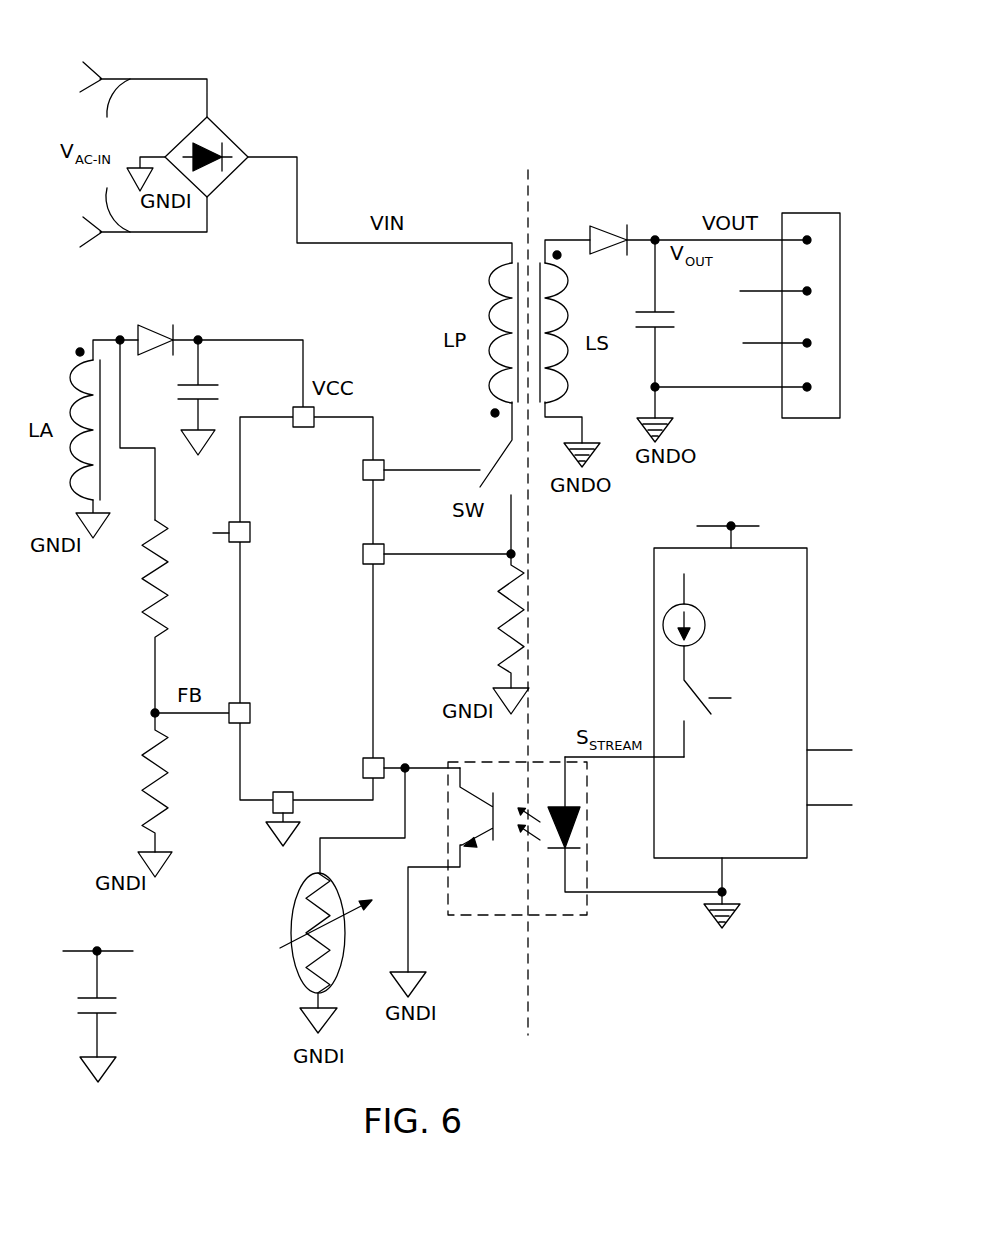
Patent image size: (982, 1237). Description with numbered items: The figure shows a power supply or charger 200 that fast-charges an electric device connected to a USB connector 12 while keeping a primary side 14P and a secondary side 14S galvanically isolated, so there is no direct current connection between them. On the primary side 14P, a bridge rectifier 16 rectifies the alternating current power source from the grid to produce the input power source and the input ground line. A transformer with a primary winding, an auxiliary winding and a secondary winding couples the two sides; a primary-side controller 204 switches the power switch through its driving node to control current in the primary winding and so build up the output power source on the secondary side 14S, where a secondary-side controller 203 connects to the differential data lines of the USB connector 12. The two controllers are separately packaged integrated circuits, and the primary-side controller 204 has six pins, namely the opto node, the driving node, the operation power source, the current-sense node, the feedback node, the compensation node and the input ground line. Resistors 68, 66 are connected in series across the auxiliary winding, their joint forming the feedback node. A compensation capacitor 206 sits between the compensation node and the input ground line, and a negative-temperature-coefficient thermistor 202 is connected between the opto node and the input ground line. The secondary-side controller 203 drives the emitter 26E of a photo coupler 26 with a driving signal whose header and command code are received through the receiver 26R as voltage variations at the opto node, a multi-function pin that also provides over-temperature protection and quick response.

The charger 200 is at (495, 103).
The bridge rectifier 16 is at (216, 121).
The primary side 14P is at (515, 177).
The secondary side 14S is at (543, 177).
The USB connector 12 is at (802, 213).
The primary-side controller 204 is at (325, 570).
The secondary-side controller 203 is at (781, 653).
The resistor 66 is at (140, 616).
The resistor 68 is at (143, 795).
The thermistor 202 is at (302, 903).
The compensation capacitor 206 is at (85, 1021).
The photo coupler 26 is at (565, 864).
The receiver 26R is at (474, 870).
The emitter 26E is at (631, 836).